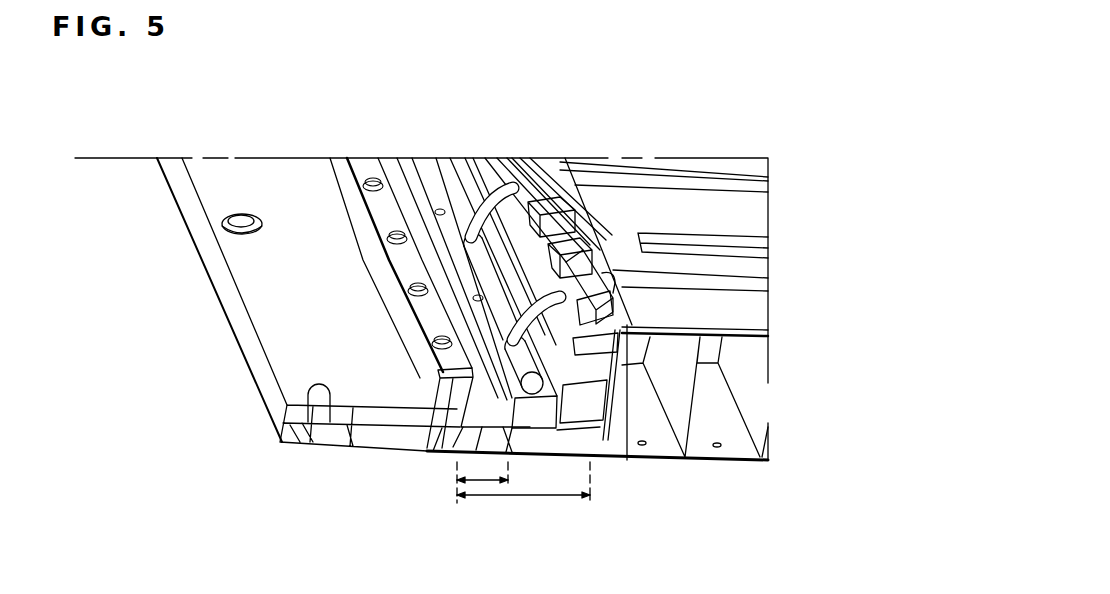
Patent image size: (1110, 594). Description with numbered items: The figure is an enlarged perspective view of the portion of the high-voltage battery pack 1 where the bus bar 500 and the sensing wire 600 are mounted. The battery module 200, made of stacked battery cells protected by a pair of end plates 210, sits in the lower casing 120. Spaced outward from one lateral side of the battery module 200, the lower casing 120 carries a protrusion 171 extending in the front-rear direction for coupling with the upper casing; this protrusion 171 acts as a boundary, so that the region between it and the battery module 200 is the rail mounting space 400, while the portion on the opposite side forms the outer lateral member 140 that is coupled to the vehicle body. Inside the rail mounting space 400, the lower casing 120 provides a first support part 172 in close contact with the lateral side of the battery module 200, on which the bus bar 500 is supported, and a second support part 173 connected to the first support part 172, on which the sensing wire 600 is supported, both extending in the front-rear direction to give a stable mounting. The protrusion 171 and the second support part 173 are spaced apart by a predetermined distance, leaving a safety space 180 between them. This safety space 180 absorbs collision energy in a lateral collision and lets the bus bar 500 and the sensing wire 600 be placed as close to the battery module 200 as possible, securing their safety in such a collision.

The high-voltage battery pack 1 is at (587, 150).
The lower casing 120 is at (718, 407).
The outer lateral member 140 is at (280, 312).
The protrusion 171 is at (392, 218).
The first support part 172 is at (582, 402).
The second support part 173 is at (450, 453).
The safety space 180 is at (483, 480).
The battery module 200 is at (723, 217).
The end plate 210 is at (625, 368).
The rail mounting space 400 is at (532, 495).
The bus bar 500 is at (538, 165).
The sensing wire 600 is at (498, 313).